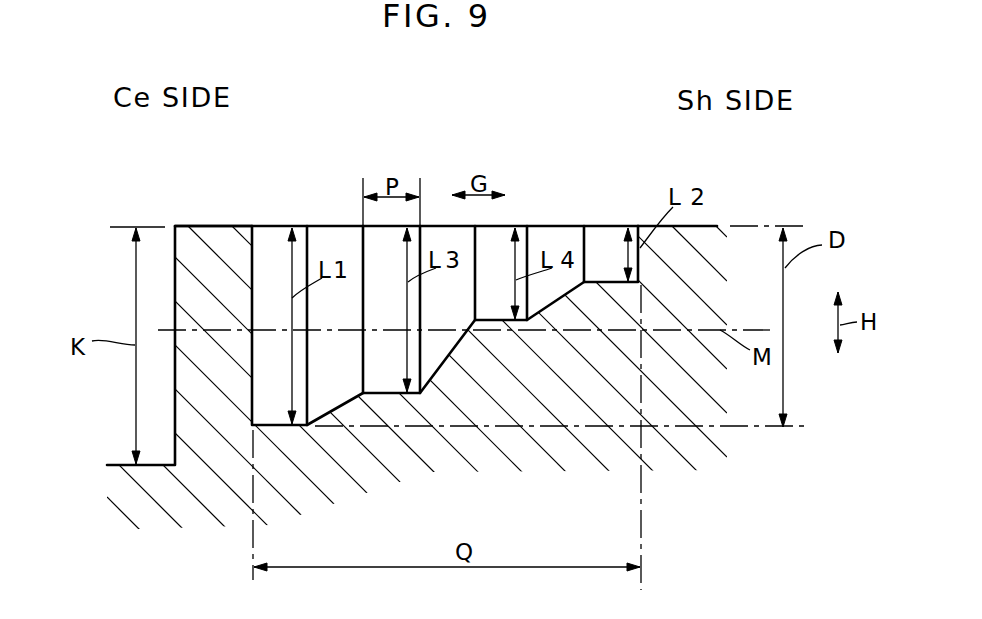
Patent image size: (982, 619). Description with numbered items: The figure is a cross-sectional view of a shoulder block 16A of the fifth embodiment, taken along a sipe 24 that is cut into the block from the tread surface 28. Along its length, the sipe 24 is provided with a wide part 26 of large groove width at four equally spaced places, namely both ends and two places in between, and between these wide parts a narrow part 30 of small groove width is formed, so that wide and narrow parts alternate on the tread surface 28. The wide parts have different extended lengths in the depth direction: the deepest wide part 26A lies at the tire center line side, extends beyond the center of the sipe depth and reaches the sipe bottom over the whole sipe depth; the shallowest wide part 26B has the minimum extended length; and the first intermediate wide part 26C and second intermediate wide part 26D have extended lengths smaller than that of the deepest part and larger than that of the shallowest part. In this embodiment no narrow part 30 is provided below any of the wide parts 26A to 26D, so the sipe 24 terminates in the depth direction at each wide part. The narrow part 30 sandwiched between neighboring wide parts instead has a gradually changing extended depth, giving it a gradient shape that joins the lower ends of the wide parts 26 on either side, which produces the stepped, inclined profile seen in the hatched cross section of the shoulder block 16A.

The shoulder block 16A is at (190, 240).
The sipe 24 is at (345, 222).
The wide part 26 is at (435, 278).
The deepest wide part 26A is at (272, 240).
The shallowest wide part 26B is at (602, 242).
The first intermediate wide part 26C is at (392, 238).
The second intermediate wide part 26D is at (495, 240).
The tread surface 28 is at (703, 224).
The narrow part 30 is at (335, 395).